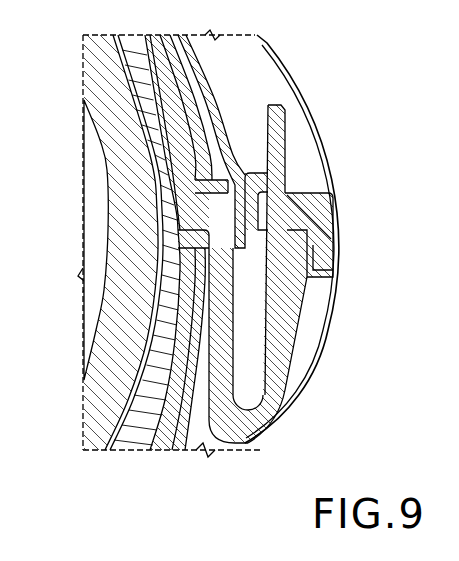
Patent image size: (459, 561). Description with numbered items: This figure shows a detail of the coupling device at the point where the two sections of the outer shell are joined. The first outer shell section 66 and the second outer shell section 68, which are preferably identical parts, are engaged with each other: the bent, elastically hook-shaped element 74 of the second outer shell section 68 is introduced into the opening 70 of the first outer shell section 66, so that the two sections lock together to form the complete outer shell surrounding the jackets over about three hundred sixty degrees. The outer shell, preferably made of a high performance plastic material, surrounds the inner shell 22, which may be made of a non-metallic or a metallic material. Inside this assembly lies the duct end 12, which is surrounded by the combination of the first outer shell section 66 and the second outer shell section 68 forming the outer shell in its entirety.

The duct end 12 is at (122, 238).
The inner shell 22 is at (158, 176).
The first outer shell section 66 is at (183, 308).
The second outer shell section 68 is at (178, 110).
The opening 70 is at (250, 311).
The hook-shaped element 74 is at (250, 428).